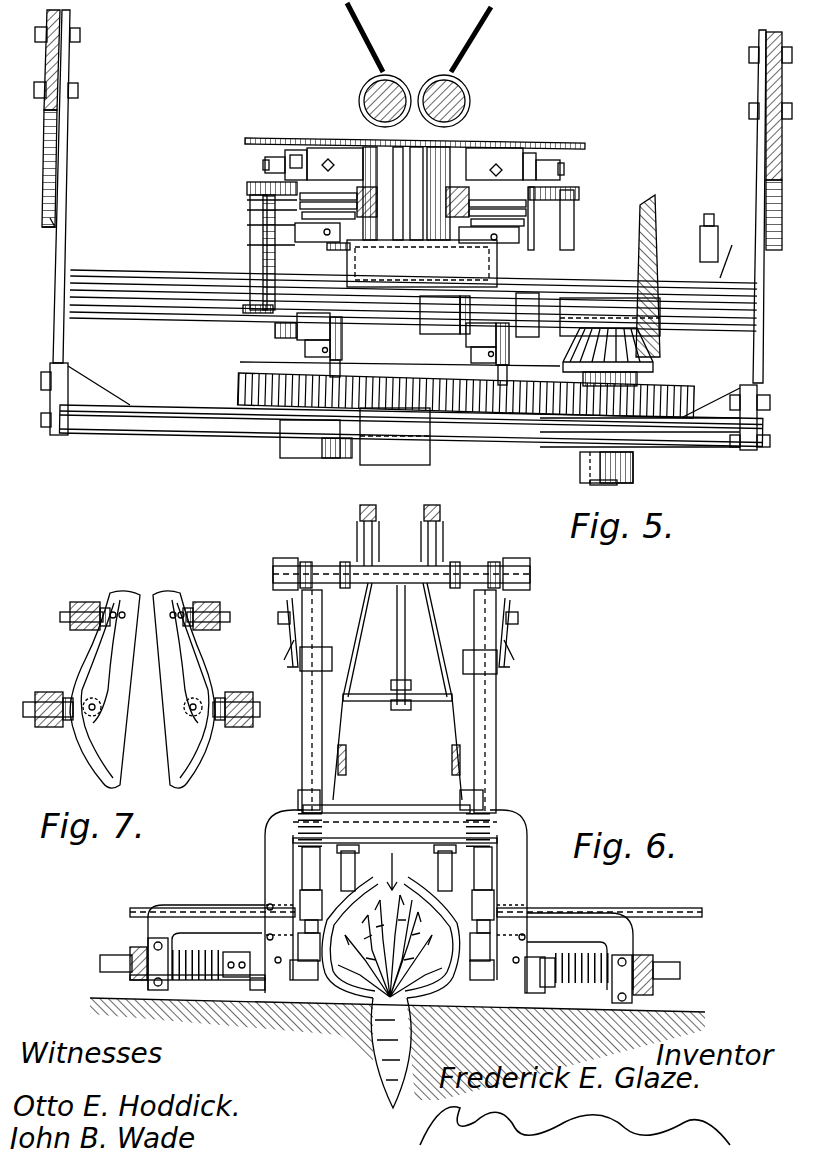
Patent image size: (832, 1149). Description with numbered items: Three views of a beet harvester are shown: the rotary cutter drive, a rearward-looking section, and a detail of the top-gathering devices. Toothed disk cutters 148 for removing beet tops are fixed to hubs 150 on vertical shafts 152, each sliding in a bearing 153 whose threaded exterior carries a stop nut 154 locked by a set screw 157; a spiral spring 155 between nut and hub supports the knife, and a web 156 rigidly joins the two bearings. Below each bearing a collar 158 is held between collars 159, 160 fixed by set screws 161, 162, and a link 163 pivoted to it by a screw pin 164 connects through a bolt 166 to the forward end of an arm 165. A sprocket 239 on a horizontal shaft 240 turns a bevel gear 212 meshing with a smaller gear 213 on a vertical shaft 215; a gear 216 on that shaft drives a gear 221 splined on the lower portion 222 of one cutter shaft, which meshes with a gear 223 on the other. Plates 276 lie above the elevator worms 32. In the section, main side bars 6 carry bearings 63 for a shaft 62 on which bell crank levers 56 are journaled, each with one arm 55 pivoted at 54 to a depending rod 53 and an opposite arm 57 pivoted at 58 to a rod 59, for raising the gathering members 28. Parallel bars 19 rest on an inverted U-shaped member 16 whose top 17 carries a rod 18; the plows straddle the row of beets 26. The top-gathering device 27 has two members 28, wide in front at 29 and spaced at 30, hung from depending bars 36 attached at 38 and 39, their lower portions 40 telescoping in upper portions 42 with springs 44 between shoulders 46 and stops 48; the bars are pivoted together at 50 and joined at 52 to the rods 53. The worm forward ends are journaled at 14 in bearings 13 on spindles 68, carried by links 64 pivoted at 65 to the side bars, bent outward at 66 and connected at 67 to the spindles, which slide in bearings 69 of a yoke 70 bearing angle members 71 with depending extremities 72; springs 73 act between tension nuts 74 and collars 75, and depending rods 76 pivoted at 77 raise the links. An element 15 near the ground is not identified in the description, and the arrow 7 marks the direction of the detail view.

In FIG. 5, the main frame bars 6 is at (58, 62).
In FIG. 6, the main frame bars 6 is at (292, 648).
In FIG. 6, the arrow 7 is at (396, 871).
In FIG. 6, the bearings 13 is at (345, 975).
In FIG. 6, the journal 14 is at (372, 990).
In FIG. 6, the ground 15 is at (425, 988).
In FIG. 6, the inverted U-shaped member 16 is at (397, 706).
In FIG. 6, the top 17 is at (422, 705).
In FIG. 6, the rod 18 is at (397, 652).
In FIG. 6, the bars 19 is at (399, 759).
In FIG. 6, the beets 26 is at (395, 1045).
In FIG. 7, the top-gathering device 27 is at (190, 775).
In FIG. 6, the top-gathering device 27 is at (352, 990).
In FIG. 7, the members 28 is at (87, 665).
In FIG. 6, the members 28 is at (300, 880).
In FIG. 7, the wide front portion 29 is at (143, 746).
In FIG. 7, the space 30 is at (142, 760).
In FIG. 5, the worms 32 is at (419, 101).
In FIG. 6, the depending bar 36 is at (345, 838).
In FIG. 7, the connection 38 is at (38, 717).
In FIG. 6, the connection 38 is at (290, 921).
In FIG. 7, the connection 39 is at (62, 612).
In FIG. 6, the lower portion 40 is at (425, 852).
In FIG. 6, the upper portion 42 is at (302, 780).
In FIG. 6, the spiral spring 44 is at (298, 830).
In FIG. 6, the shoulder 46 is at (569, 795).
In FIG. 6, the stop 48 is at (573, 768).
In FIG. 6, the pivotal connection 50 is at (497, 665).
In FIG. 6, the connection 52 is at (390, 797).
In FIG. 6, the depending rod 53 is at (352, 640).
In FIG. 6, the pivotal connection 54 is at (464, 596).
In FIG. 6, the arm 55 is at (399, 593).
In FIG. 6, the bell crank lever 56 is at (415, 543).
In FIG. 6, the opposite arm 57 is at (404, 520).
In FIG. 6, the pivotal connection 58 is at (357, 518).
In FIG. 6, the rod 59 is at (376, 507).
In FIG. 6, the shaft 62 is at (470, 566).
In FIG. 6, the bearings 63 is at (285, 558).
In FIG. 6, the links 64 is at (302, 750).
In FIG. 6, the pivotal connection 65 is at (290, 630).
In FIG. 6, the outwardly bent portion 66 is at (232, 905).
In FIG. 6, the lower extremities 67 is at (250, 985).
In FIG. 6, the spindles 68 is at (300, 980).
In FIG. 6, the bearings 69 is at (396, 947).
In FIG. 6, the yoke 70 is at (494, 900).
In FIG. 6, the angle members 71 is at (193, 918).
In FIG. 6, the depending extremities 72 is at (155, 938).
In FIG. 6, the spiral springs 73 is at (391, 973).
In FIG. 6, the tension nuts 74 is at (122, 985).
In FIG. 6, the adjustable collars 75 is at (437, 938).
In FIG. 6, the depending rods 76 is at (282, 610).
In FIG. 6, the pivotal connection 77 is at (515, 840).
In FIG. 5, the rotary knives 148 is at (263, 139).
In FIG. 5, the hubs 150 is at (330, 148).
In FIG. 5, the shafts 152 is at (462, 334).
In FIG. 5, the bearing 153 is at (245, 290).
In FIG. 5, the stop nut 154 is at (300, 215).
In FIG. 5, the spiral spring 155 is at (247, 190).
In FIG. 5, the web 156 is at (403, 287).
In FIG. 5, the set screw 157 is at (295, 236).
In FIG. 5, the collar 158 is at (305, 350).
In FIG. 5, the upper collar 159 is at (275, 330).
In FIG. 5, the lower collar 160 is at (310, 440).
In FIG. 5, the set screw 161 is at (420, 318).
In FIG. 5, the set screw 162 is at (330, 350).
In FIG. 5, the link 163 is at (250, 262).
In FIG. 5, the screw pin 164 is at (297, 328).
In FIG. 5, the arm 165 is at (265, 170).
In FIG. 5, the bolt 166 is at (298, 150).
In FIG. 5, the beveled gear 212 is at (655, 200).
In FIG. 5, the gear 213 is at (653, 350).
In FIG. 5, the shaft 215 is at (612, 485).
In FIG. 5, the gear 216 is at (653, 400).
In FIG. 5, the gear 221 is at (395, 440).
In FIG. 5, the lower portion 222 is at (352, 452).
In FIG. 5, the gear 223 is at (280, 400).
In FIG. 5, the sprocket 239 is at (735, 222).
In FIG. 5, the horizontal shaft 240 is at (610, 284).
In FIG. 5, the plates 276 is at (362, 34).